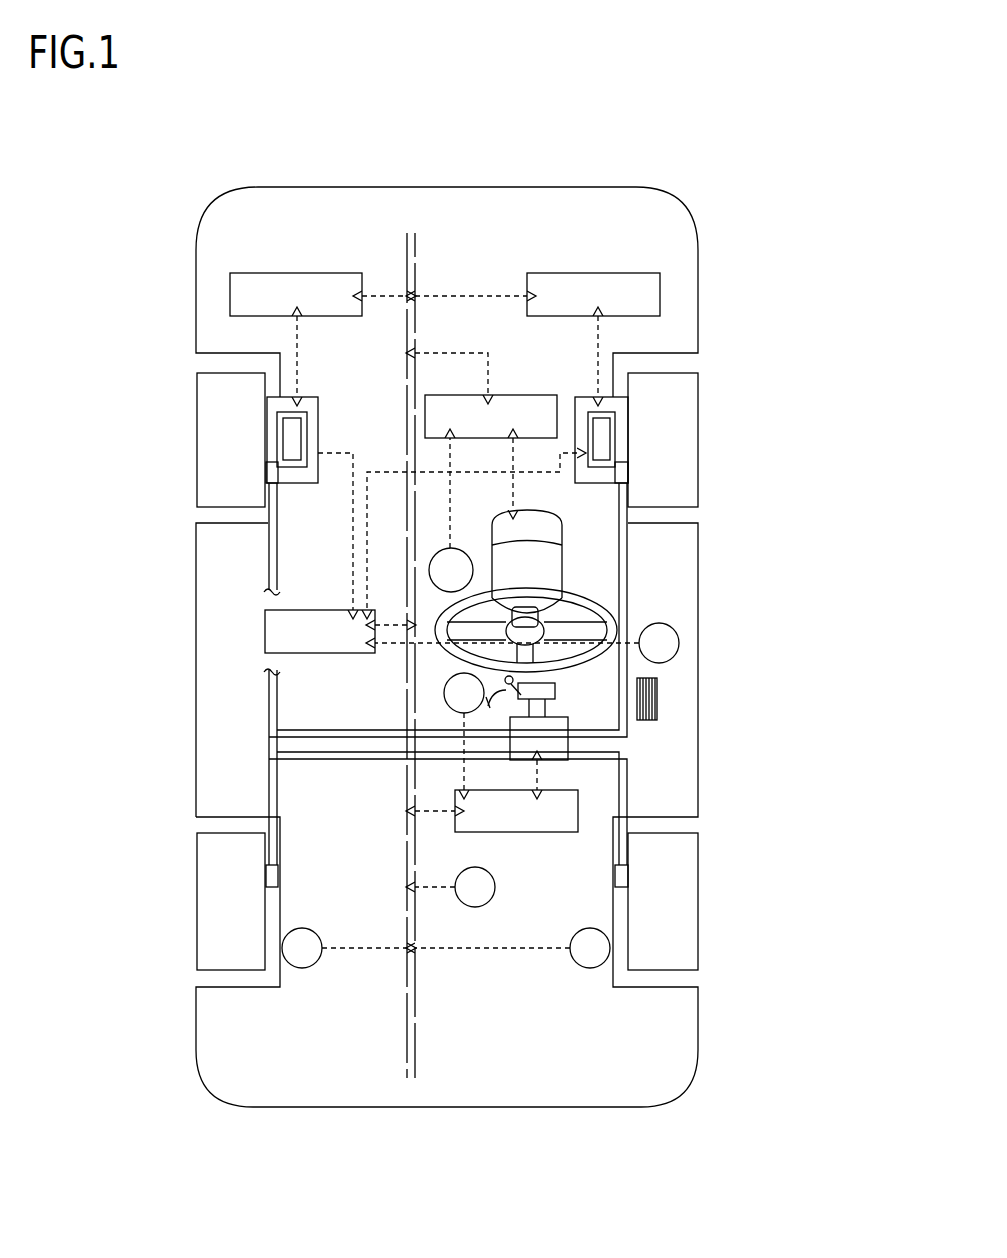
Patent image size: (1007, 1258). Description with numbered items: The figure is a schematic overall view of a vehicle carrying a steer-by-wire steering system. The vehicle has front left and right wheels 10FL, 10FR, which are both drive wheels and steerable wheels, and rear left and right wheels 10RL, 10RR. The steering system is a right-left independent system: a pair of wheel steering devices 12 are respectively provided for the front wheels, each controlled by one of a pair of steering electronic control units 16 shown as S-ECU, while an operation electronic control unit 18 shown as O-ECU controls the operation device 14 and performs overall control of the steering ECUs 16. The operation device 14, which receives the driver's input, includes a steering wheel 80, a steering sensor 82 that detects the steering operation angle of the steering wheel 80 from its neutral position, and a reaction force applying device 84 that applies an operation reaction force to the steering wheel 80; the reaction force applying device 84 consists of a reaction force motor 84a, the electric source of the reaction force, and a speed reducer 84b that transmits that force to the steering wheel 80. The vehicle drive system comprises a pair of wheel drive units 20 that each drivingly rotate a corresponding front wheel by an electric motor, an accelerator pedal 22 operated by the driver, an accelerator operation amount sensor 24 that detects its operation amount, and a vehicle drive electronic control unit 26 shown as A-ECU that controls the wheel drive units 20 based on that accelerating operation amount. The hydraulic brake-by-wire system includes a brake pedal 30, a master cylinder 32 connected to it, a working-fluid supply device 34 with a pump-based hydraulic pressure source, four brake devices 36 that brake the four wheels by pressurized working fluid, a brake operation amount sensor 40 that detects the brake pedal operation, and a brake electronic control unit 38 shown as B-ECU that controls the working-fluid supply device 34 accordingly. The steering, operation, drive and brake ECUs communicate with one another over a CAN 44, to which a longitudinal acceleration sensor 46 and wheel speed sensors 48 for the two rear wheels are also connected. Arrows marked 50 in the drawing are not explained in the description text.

The front left wheel 10FL is at (212, 398).
The front right wheel 10FR is at (682, 398).
The rear left wheel 10RL is at (215, 948).
The rear right wheel 10RR is at (680, 948).
The wheel steering device 12 is at (280, 420).
The operation device 14 is at (635, 598).
The steering electronic control unit 16 is at (233, 299).
The operation electronic control unit 18 is at (437, 414).
The wheel drive unit 20 is at (290, 440).
The accelerator pedal 22 is at (657, 710).
The accelerator operation amount sensor 24 is at (667, 658).
The vehicle drive electronic control unit 26 is at (268, 624).
The brake pedal 30 is at (540, 688).
The master cylinder 32 is at (553, 702).
The working-fluid supply device 34 is at (553, 760).
The brake device 36 is at (272, 474).
The brake electronic control unit 38 is at (545, 832).
The brake operation amount sensor 40 is at (445, 693).
The CAN 44 is at (417, 926).
The longitudinal acceleration sensor 46 is at (495, 887).
The wheel speed sensor 48 is at (303, 928).
The steering force transmission direction 50 is at (262, 452).
The steering wheel 80 is at (618, 590).
The steering sensor 82 is at (458, 552).
The reaction force applying device 84 is at (598, 580).
The reaction force motor 84a is at (540, 523).
The speed reducer 84b is at (540, 572).